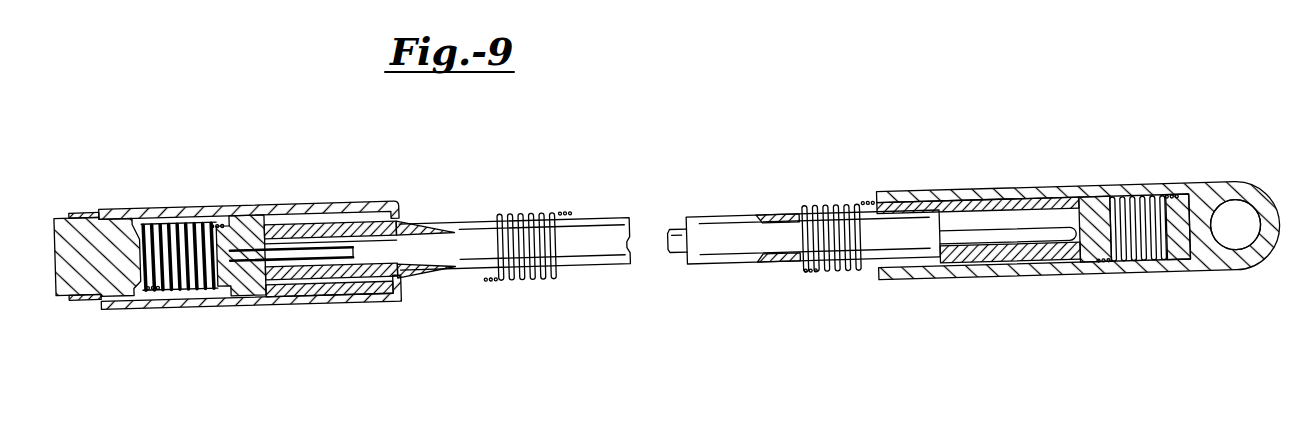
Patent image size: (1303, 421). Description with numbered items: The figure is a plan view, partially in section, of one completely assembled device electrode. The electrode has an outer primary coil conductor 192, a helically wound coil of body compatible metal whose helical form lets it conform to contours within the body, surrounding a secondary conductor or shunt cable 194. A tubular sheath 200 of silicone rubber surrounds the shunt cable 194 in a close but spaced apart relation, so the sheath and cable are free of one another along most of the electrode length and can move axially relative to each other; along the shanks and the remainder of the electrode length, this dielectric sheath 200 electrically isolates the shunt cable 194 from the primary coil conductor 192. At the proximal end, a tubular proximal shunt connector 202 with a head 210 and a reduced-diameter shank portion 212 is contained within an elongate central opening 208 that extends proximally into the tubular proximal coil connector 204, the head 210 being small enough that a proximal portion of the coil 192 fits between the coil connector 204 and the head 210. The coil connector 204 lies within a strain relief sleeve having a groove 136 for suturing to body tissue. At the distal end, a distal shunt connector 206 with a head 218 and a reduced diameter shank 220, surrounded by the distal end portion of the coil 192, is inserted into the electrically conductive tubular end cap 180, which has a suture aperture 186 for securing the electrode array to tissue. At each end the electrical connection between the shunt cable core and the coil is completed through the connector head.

The groove 136 is at (77, 208).
The end cap 180 is at (1195, 183).
The aperture 186 is at (1240, 240).
The primary coil conductor 192 is at (183, 305).
The shunt cable 194 is at (675, 260).
The tubular sheath 200 is at (468, 223).
The proximal shunt connector 202 is at (259, 218).
The proximal coil connector 204 is at (82, 303).
The distal shunt connector 206 is at (1099, 186).
The central opening 208 is at (245, 290).
The head 210 is at (132, 207).
The shank portion 212 is at (337, 230).
The head 218 is at (1080, 195).
The shank 220 is at (949, 263).